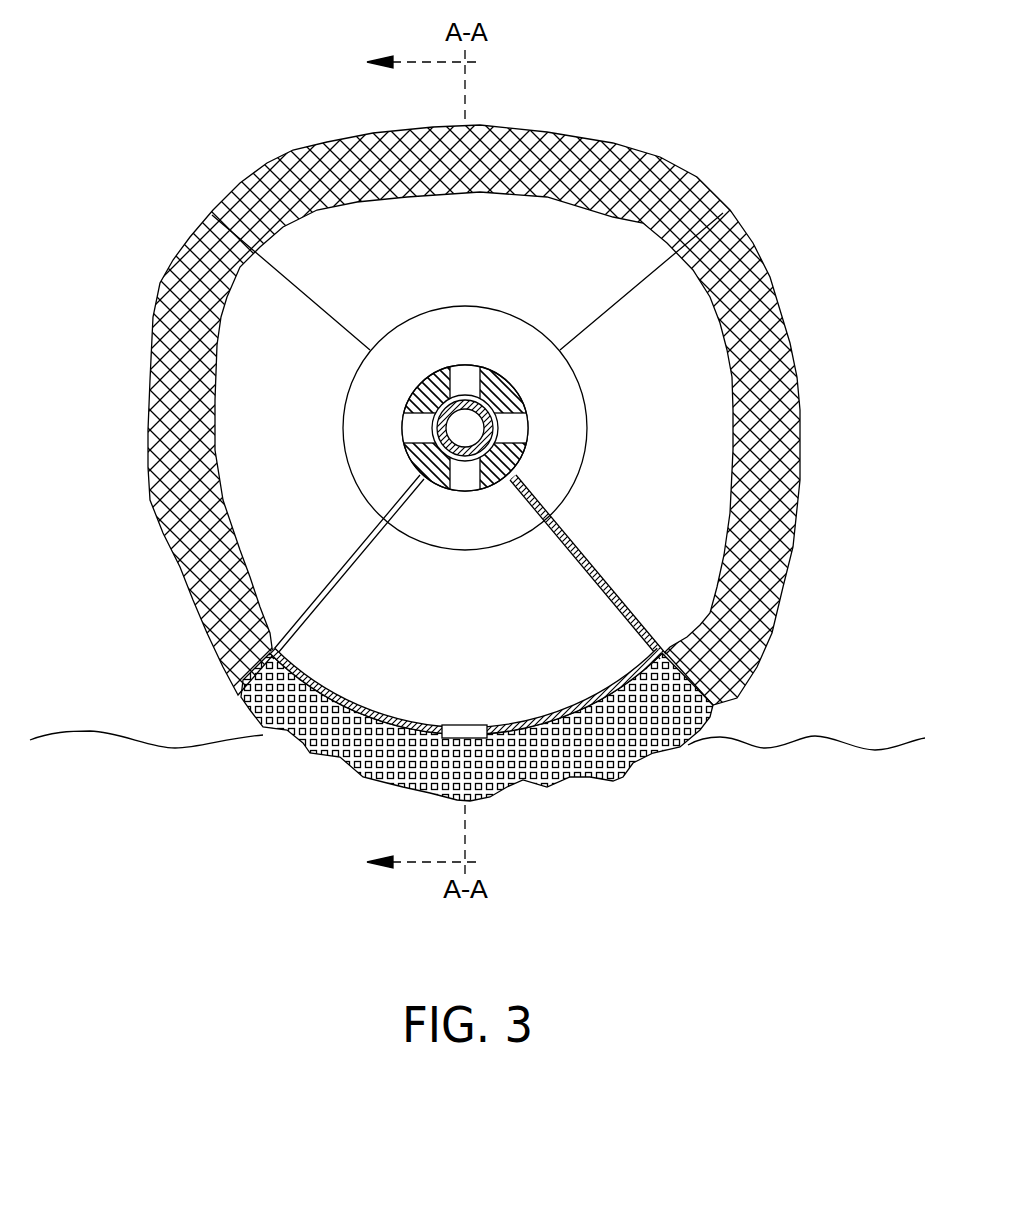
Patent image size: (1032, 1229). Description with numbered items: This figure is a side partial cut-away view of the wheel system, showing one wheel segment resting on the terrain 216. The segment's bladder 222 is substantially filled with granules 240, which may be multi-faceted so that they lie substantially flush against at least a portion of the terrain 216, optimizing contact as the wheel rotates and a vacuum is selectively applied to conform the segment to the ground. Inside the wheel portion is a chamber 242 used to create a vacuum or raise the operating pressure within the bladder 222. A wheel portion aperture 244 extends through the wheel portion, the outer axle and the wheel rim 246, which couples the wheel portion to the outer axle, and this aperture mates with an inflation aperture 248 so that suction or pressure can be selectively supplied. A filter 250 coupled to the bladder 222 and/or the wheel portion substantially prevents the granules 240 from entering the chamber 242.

The terrain 216 is at (375, 937).
The bladder 222 is at (190, 630).
The granules 240 is at (743, 260).
The chamber 242 is at (548, 635).
The wheel portion aperture 244 is at (400, 479).
The wheel rim 246 is at (562, 405).
The inflation aperture 248 is at (458, 478).
The filter 250 is at (468, 722).